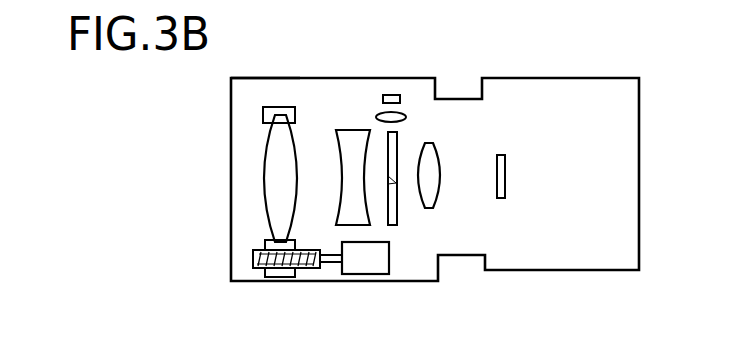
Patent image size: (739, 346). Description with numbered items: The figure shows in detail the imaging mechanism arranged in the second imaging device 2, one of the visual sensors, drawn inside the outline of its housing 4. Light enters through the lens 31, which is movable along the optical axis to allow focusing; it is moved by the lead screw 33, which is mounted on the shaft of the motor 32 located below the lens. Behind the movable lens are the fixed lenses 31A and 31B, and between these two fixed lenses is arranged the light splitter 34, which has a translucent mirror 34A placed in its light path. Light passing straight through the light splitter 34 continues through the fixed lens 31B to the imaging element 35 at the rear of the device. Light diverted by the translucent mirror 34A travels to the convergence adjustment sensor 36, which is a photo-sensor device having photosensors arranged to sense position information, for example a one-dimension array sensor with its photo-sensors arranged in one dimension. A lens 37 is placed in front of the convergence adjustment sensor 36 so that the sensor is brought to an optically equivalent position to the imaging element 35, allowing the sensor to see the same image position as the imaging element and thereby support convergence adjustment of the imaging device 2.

The imaging device 2 is at (639, 102).
The housing wall 4 is at (249, 89).
The lens 31 is at (264, 171).
The fixed lens 31A is at (345, 130).
The fixed lens 31B is at (438, 162).
The motor 32 is at (360, 262).
The lead screw 33 is at (306, 270).
The light splitter 34 is at (397, 143).
The translucent mirror 34A is at (392, 178).
The imaging element 35 is at (505, 175).
The convergence adjustment sensor 36 is at (391, 95).
The lens 37 is at (402, 112).